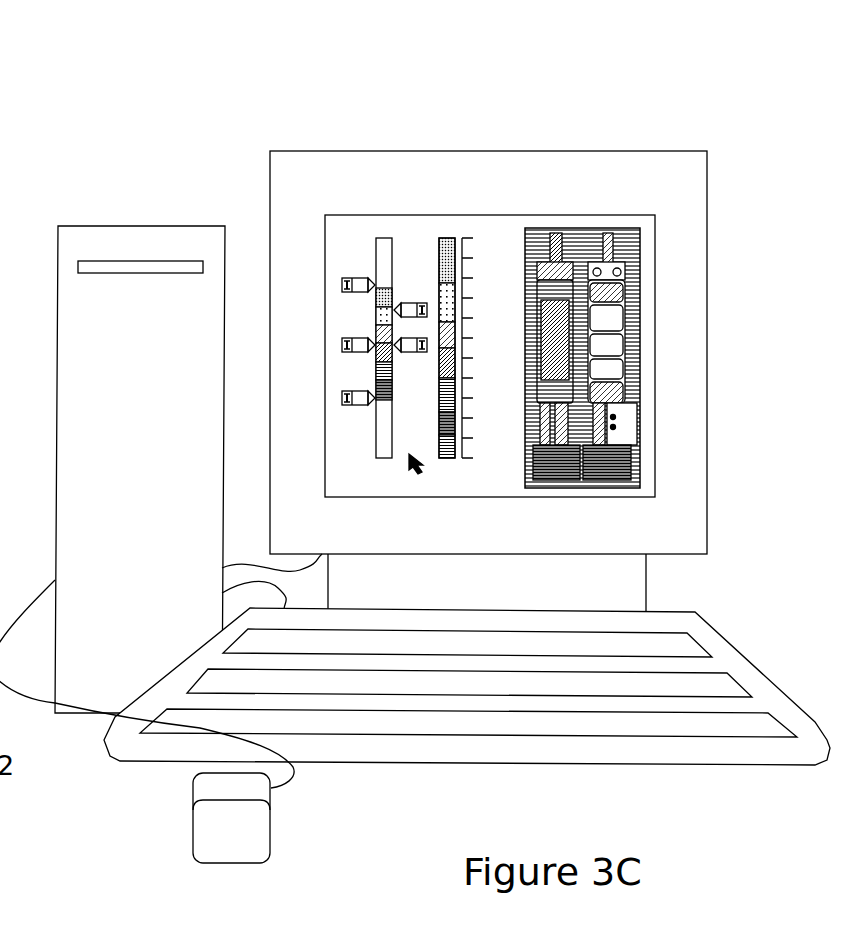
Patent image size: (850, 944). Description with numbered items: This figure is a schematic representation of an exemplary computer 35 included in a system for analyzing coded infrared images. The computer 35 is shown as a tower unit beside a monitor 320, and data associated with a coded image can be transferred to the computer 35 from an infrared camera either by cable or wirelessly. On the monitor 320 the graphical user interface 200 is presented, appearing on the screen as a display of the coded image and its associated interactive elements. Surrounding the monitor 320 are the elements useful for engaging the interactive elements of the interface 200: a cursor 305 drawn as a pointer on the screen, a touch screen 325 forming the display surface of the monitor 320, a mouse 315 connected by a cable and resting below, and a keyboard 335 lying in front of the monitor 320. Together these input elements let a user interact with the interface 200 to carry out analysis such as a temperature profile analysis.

The computer 35 is at (188, 147).
The monitor 320 is at (353, 137).
The touch screen 325 is at (493, 228).
The graphical user interface 200 is at (542, 215).
The cursor 305 is at (424, 470).
The mouse 315 is at (257, 825).
The keyboard 335 is at (588, 725).